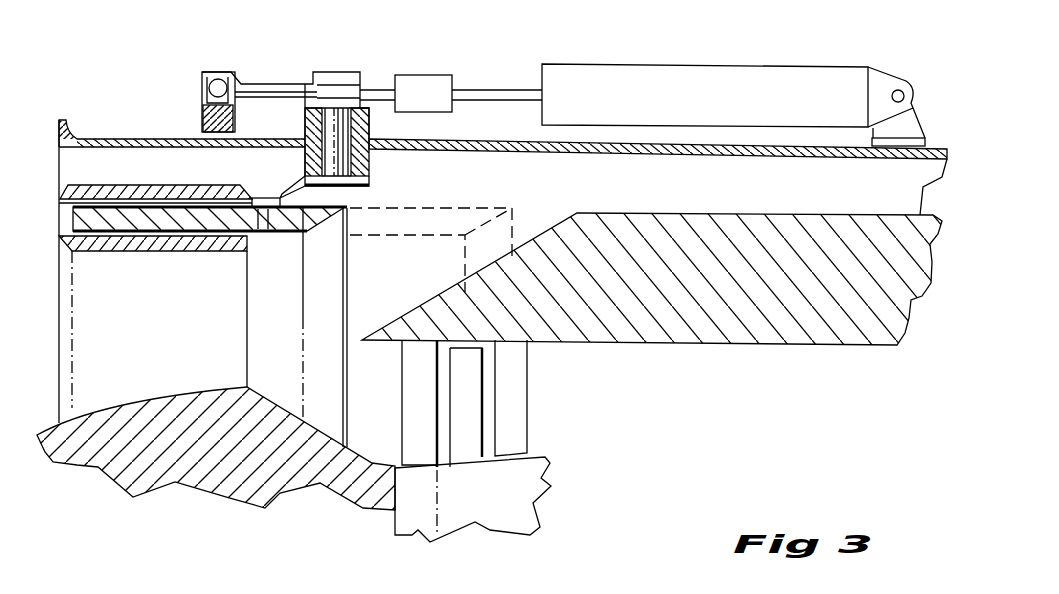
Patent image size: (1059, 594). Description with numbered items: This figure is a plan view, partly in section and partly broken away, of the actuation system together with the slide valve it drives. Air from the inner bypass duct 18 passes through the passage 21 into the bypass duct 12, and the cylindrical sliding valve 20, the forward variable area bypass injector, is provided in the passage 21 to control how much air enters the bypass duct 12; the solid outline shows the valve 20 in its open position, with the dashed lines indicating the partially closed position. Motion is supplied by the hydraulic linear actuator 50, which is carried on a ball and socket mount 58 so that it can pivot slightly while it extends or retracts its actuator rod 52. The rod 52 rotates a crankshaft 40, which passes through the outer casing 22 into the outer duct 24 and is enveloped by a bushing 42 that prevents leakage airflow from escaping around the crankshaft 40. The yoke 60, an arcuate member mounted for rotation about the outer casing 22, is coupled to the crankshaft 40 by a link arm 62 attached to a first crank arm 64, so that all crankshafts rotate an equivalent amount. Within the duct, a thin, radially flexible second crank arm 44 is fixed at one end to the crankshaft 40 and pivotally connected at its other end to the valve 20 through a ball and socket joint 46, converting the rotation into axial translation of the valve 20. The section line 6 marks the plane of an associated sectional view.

The section line 6- 6 is at (59, 203).
The bypass duct 12 is at (767, 202).
The inner bypass duct 18 is at (157, 288).
The sliding valve 20 is at (124, 228).
The passage 21 is at (370, 293).
The outer casing 22 is at (103, 137).
The outer duct 24 is at (143, 175).
The crankshaft 40 is at (328, 131).
The bushing 42 is at (371, 125).
The second crank arm 44 is at (272, 193).
The ball and socket joint 46 is at (254, 197).
The hydraulic linear actuator 50 is at (602, 64).
The actuator rod 52 is at (488, 90).
The ball and socket mount 58 is at (899, 90).
The yoke 60 is at (202, 115).
The link arm 62 is at (201, 87).
The first crank arm 64 is at (267, 84).